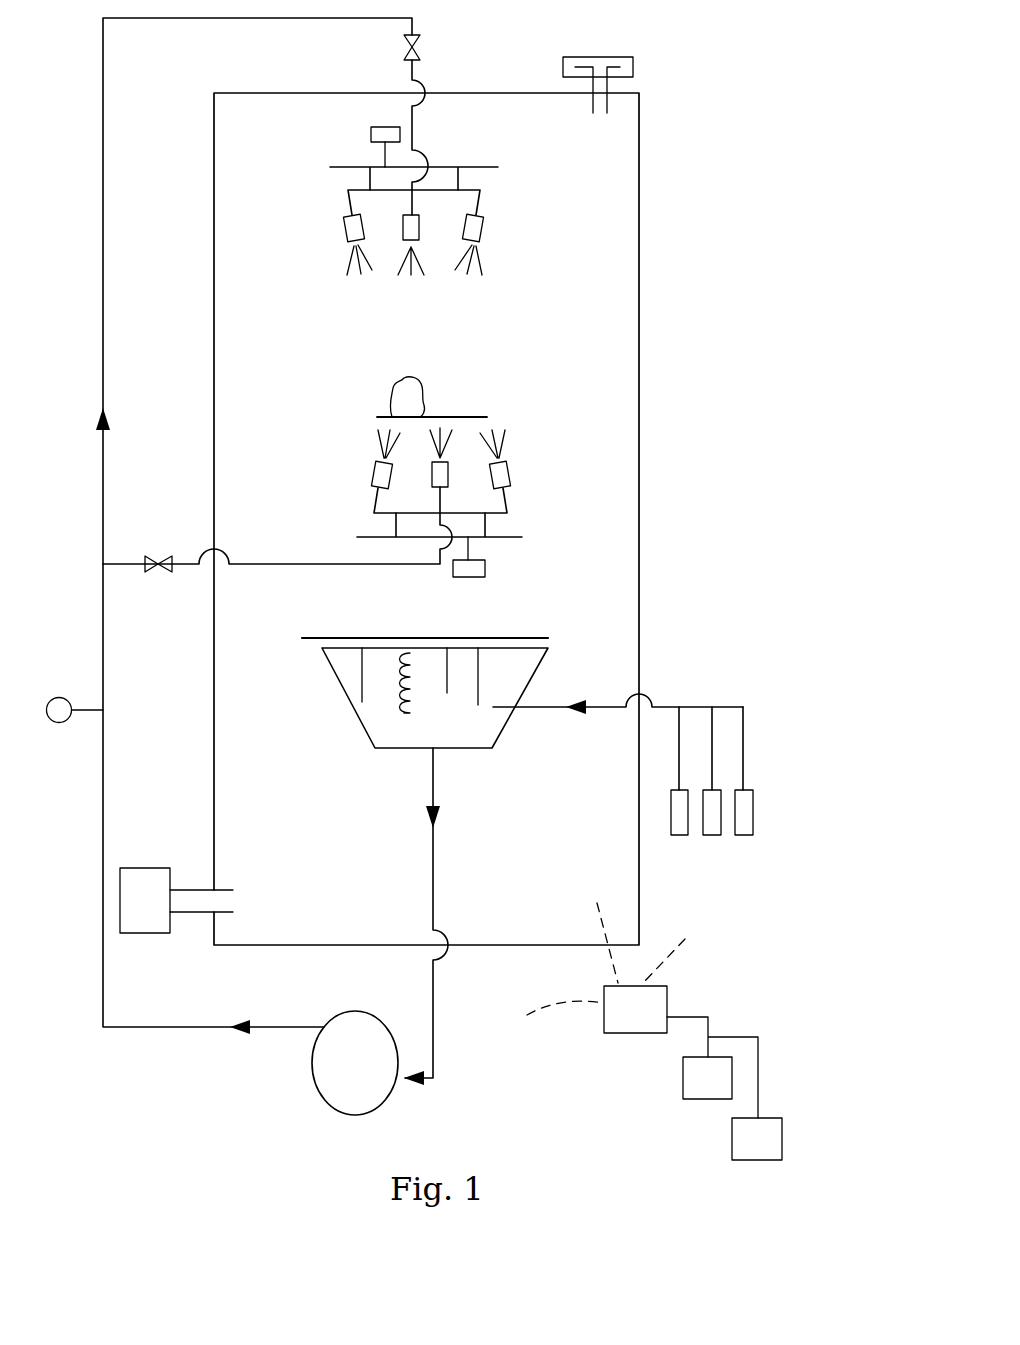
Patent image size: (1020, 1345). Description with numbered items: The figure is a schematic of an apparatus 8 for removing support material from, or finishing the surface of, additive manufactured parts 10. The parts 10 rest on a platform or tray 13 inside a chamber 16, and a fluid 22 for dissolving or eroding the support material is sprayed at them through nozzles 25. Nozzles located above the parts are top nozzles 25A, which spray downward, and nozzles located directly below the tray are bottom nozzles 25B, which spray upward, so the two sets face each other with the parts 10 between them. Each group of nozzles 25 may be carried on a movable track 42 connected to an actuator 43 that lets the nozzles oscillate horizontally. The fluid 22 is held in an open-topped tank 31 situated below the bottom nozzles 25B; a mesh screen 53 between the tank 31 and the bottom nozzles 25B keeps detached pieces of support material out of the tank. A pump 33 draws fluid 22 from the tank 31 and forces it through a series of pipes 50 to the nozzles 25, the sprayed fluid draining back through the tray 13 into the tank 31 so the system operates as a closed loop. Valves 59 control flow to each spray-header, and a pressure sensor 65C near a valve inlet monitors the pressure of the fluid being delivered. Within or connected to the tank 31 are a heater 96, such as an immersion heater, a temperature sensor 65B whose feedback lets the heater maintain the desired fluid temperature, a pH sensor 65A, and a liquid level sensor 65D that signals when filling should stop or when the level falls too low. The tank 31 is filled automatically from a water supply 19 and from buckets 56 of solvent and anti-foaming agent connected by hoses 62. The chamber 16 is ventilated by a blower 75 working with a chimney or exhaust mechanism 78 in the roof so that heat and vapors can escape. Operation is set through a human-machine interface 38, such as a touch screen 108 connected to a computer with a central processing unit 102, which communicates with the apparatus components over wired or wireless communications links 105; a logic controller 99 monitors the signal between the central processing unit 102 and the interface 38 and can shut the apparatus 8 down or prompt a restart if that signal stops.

The apparatus 8 is at (680, 189).
The additive manufactured part 10 is at (405, 380).
The platform or tray 13 is at (472, 417).
The chamber 16 is at (565, 142).
The water supply 19 is at (744, 835).
The SF/SR fluid 22 is at (502, 250).
The nozzle 25 is at (345, 229).
The top nozzles 25A is at (326, 247).
The bottom nozzles 25B is at (536, 496).
The tank 31 is at (347, 696).
The pump 33 is at (370, 1074).
The human-machine interface (HMI) 38 is at (762, 1017).
The movable track 42 is at (343, 166).
The actuator 43 is at (385, 127).
The pipes 50 is at (150, 1027).
The mesh screen 53 is at (303, 641).
The bucket 56 is at (712, 835).
The valve 59 is at (422, 50).
The hose 62 is at (715, 743).
The pH sensor 65A is at (480, 672).
The temperature sensor 65B is at (448, 690).
The pressure sensor 65C is at (60, 723).
The liquid level sensor 65D is at (361, 665).
The blower 75 is at (159, 910).
The chimney or exhaust mechanism 78 is at (622, 57).
The heater 96 is at (402, 710).
The logic controller 99 is at (732, 1147).
The central processing unit (CPU) 102 is at (635, 1009).
The communications links 105 is at (598, 922).
The touch screen 108 is at (707, 1078).